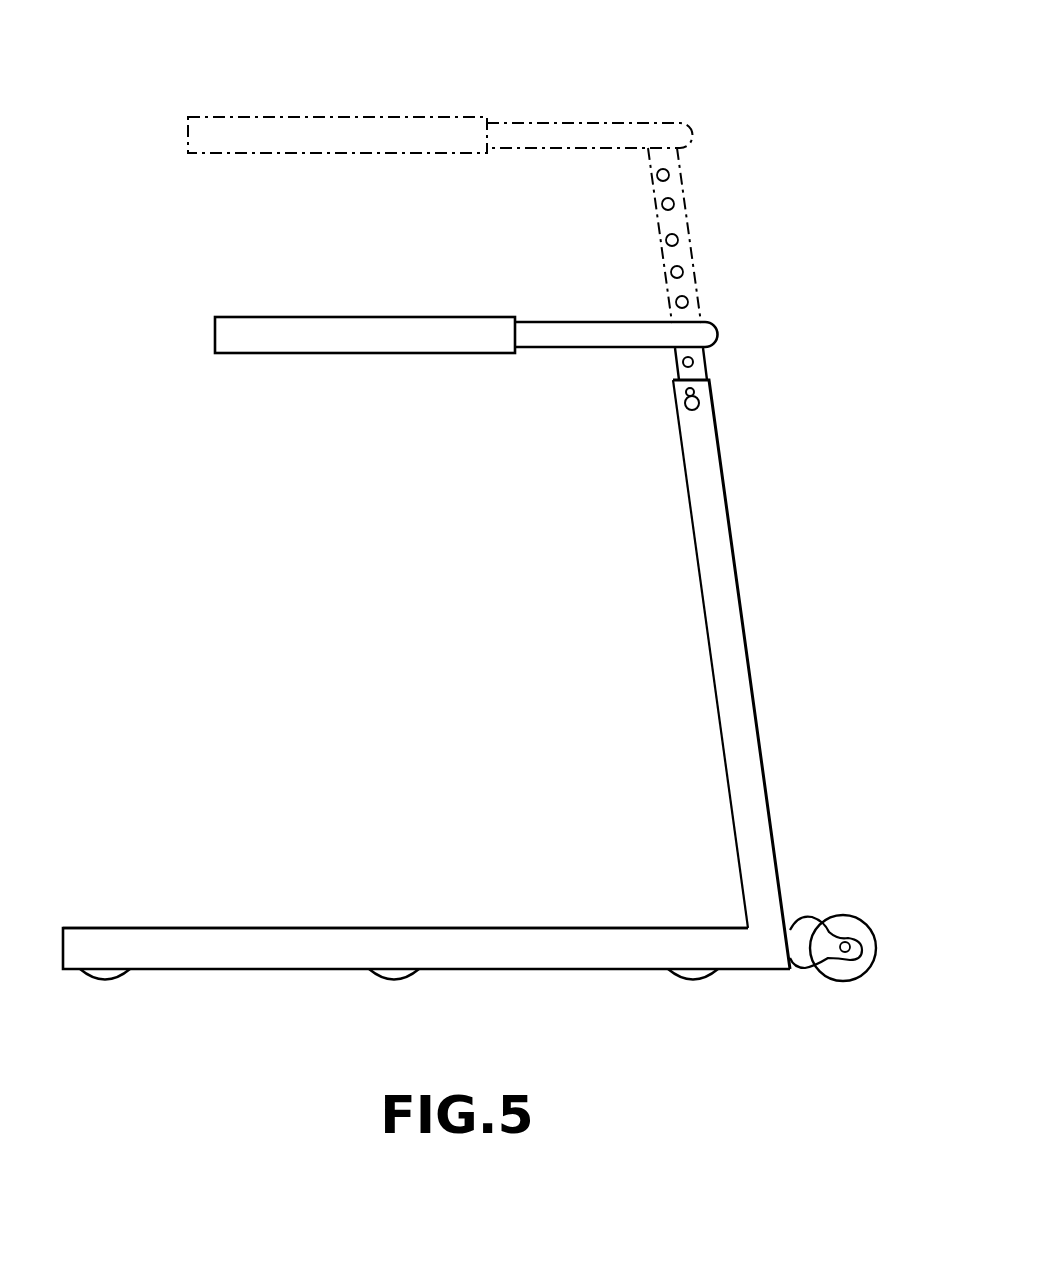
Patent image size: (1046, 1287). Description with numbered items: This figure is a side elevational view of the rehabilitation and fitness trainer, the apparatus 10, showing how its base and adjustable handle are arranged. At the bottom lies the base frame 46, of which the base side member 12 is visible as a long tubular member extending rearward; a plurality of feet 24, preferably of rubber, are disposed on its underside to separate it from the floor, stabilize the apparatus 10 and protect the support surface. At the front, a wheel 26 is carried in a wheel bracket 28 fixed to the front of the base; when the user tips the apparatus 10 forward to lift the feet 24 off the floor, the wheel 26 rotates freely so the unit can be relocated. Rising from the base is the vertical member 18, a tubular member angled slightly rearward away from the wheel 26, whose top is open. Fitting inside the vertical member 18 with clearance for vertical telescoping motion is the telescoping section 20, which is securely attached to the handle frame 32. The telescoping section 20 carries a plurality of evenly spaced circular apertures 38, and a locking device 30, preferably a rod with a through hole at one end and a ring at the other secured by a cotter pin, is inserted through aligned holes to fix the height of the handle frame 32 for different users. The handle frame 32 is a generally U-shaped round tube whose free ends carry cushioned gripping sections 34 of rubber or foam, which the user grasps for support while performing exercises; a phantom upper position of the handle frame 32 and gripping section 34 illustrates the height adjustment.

The apparatus 10 is at (786, 535).
The base side member 12 is at (88, 948).
The vertical member 18 is at (730, 680).
The telescoping section 20 is at (706, 370).
The feet 24 is at (108, 981).
The wheel 26 is at (868, 925).
The wheel bracket 28 is at (806, 938).
The locking device 30 is at (683, 405).
The handle frame 32 is at (538, 118).
The gripping section 34 is at (228, 138).
The aperture 38 is at (669, 177).
The base frame 46 is at (265, 940).